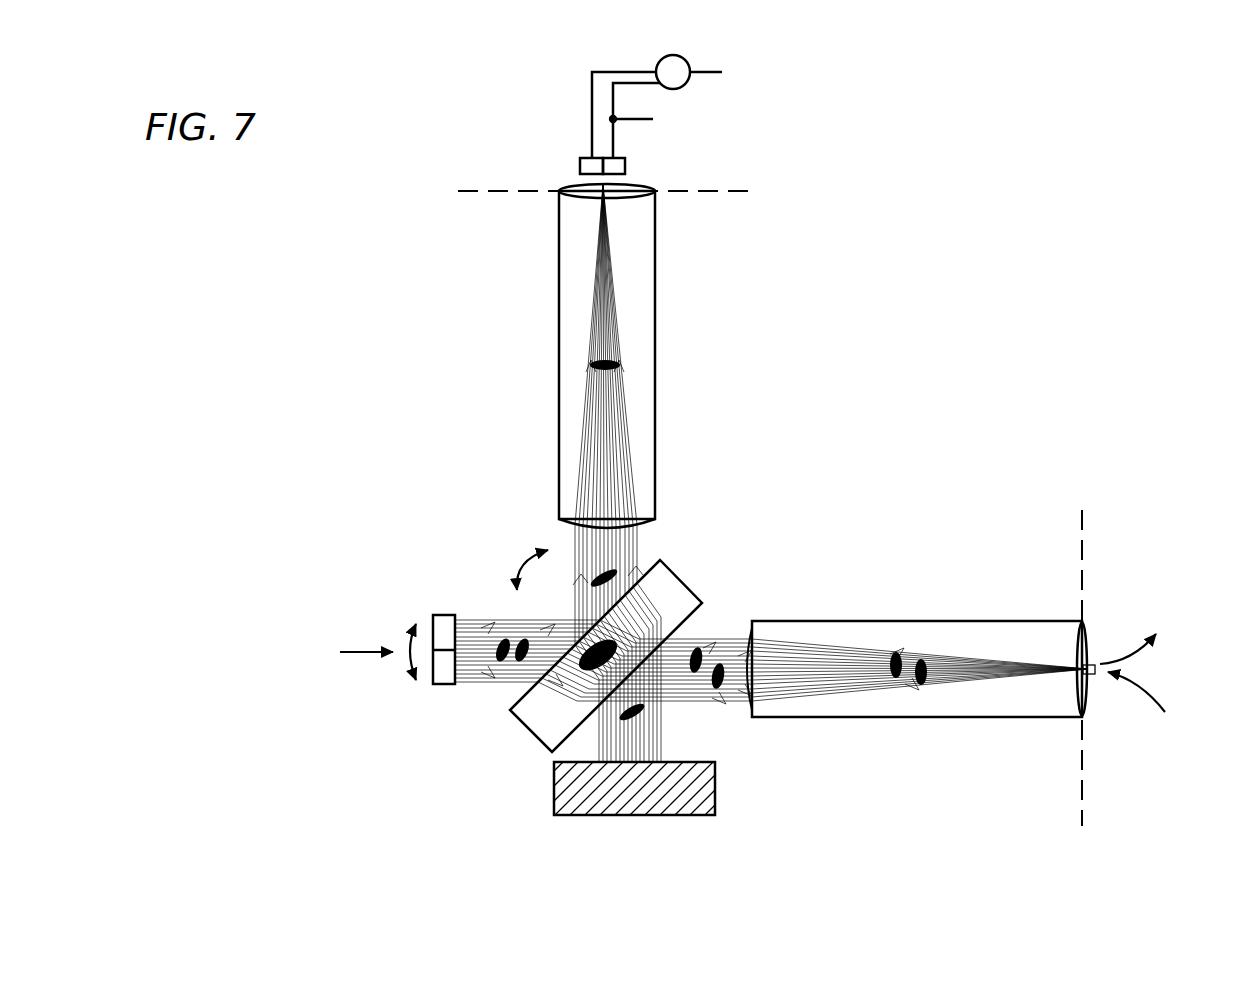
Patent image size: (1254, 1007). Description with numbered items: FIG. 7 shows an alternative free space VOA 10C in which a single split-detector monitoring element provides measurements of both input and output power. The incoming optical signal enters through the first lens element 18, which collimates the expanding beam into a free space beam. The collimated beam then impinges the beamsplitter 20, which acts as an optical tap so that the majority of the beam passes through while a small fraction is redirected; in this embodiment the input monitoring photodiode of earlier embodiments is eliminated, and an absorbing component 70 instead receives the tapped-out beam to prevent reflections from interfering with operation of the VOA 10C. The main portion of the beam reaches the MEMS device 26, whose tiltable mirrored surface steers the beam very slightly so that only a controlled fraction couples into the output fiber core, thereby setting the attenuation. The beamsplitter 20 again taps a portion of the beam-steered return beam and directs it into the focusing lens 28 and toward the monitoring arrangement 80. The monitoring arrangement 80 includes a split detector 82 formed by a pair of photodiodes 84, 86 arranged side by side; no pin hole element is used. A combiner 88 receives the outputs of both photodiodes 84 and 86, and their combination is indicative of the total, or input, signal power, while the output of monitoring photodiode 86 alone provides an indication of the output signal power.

The free space VOA 10C is at (266, 220).
The first lens element 18 is at (990, 636).
The beamsplitter 20 is at (540, 721).
The MEMS device 26 is at (441, 618).
The focusing lens 28 is at (645, 327).
The absorbing component 70 is at (606, 815).
The monitoring arrangement 80 is at (522, 35).
The split detector 82 is at (563, 173).
The photodiode 84 is at (581, 166).
The monitoring photodiode 86 is at (626, 166).
The combiner 88 is at (685, 85).